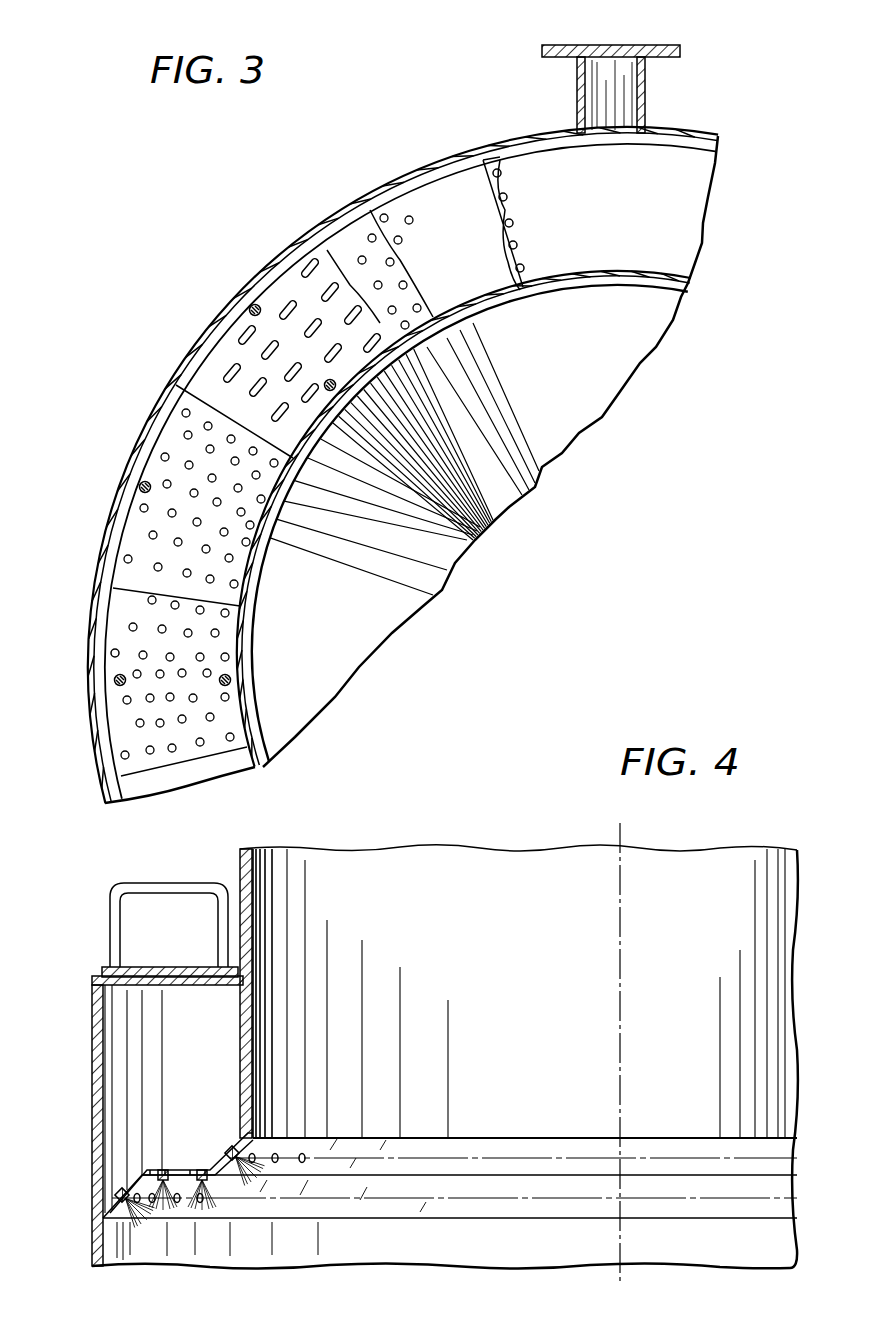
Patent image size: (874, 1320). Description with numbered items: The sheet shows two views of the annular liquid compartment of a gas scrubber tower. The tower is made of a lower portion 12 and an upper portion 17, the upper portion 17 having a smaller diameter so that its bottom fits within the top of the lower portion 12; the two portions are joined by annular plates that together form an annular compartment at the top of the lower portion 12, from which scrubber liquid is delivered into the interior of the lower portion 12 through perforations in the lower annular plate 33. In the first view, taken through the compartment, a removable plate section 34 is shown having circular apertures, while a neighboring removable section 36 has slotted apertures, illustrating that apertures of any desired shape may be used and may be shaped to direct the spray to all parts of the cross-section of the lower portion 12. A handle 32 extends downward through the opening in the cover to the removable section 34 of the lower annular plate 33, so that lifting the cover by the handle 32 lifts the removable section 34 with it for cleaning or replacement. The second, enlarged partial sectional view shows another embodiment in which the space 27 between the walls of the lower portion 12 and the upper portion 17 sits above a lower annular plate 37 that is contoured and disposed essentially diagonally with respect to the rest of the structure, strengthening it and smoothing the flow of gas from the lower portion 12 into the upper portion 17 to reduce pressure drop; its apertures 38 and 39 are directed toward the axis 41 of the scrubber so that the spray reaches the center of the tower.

In FIG. 3, the lower portion 12 is at (125, 483).
In FIG. 4, the lower portion 12 is at (93, 1077).
In FIG. 3, the upper portion 17 is at (256, 668).
In FIG. 4, the upper portion 17 is at (240, 885).
In FIG. 4, the annular chamber 27 is at (197, 1075).
In FIG. 3, the handle 32 is at (114, 685).
In FIG. 3, the lower annular plate 33 is at (460, 157).
In FIG. 3, the removable section 34 is at (111, 655).
In FIG. 3, the removable section 36 is at (222, 348).
In FIG. 4, the lower annular plate 37 is at (185, 1172).
In FIG. 4, the aperture 38 is at (260, 1157).
In FIG. 4, the aperture 39 is at (128, 1202).
In FIG. 4, the axis 41 is at (617, 857).